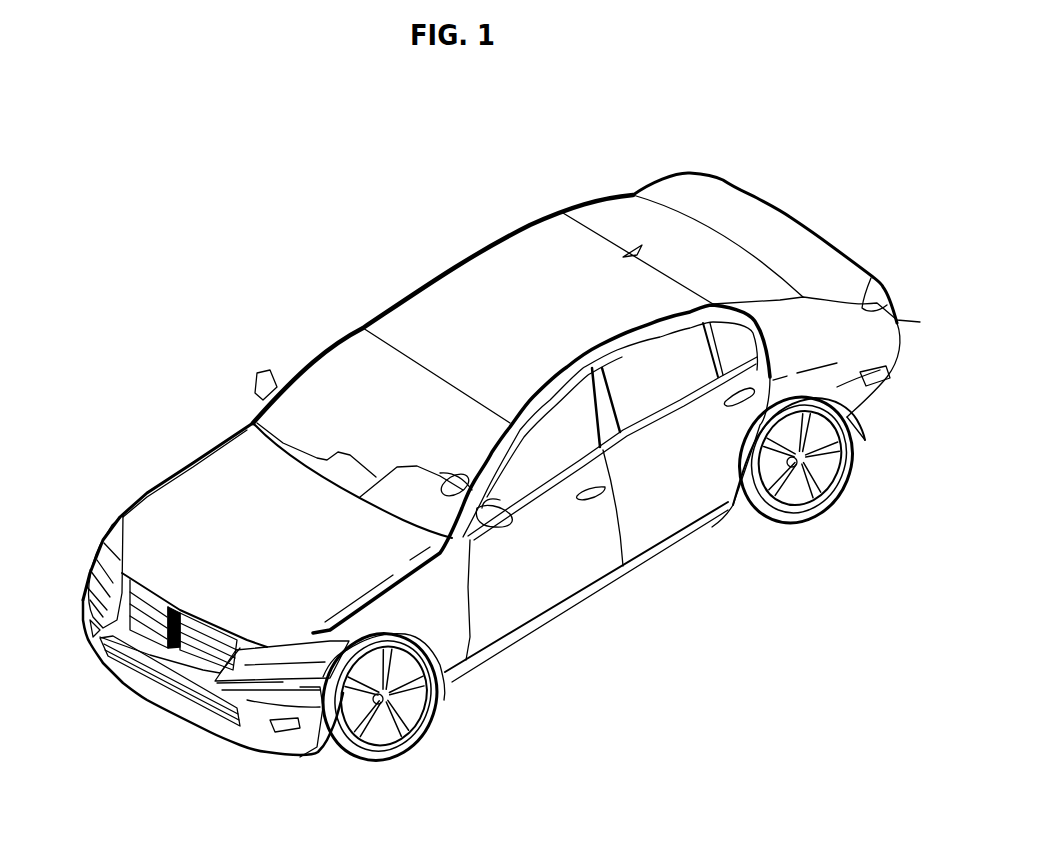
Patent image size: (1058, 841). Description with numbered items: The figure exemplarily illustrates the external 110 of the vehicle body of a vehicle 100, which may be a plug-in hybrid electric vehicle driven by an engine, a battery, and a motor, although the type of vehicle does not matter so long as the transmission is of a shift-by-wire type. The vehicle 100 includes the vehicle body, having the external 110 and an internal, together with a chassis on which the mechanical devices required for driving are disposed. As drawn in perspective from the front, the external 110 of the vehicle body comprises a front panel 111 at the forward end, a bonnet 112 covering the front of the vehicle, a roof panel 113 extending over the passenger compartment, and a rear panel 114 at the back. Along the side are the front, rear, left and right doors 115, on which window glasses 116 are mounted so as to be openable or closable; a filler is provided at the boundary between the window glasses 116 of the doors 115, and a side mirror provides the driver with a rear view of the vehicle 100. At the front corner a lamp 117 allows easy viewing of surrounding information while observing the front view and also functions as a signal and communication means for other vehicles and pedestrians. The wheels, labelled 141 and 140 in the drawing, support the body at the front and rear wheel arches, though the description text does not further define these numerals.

The vehicle 100 is at (422, 109).
The external of the vehicle body 110 is at (645, 178).
The front panel 111 is at (249, 732).
The bonnet 112 is at (195, 482).
The roof panel 113 is at (490, 262).
The rear panel 114 is at (893, 323).
The doors 115 is at (583, 568).
The window glasses 116 is at (650, 380).
The lamp 117 is at (107, 545).
The wheel assembly 140 is at (423, 697).
The wheel 141 is at (407, 705).